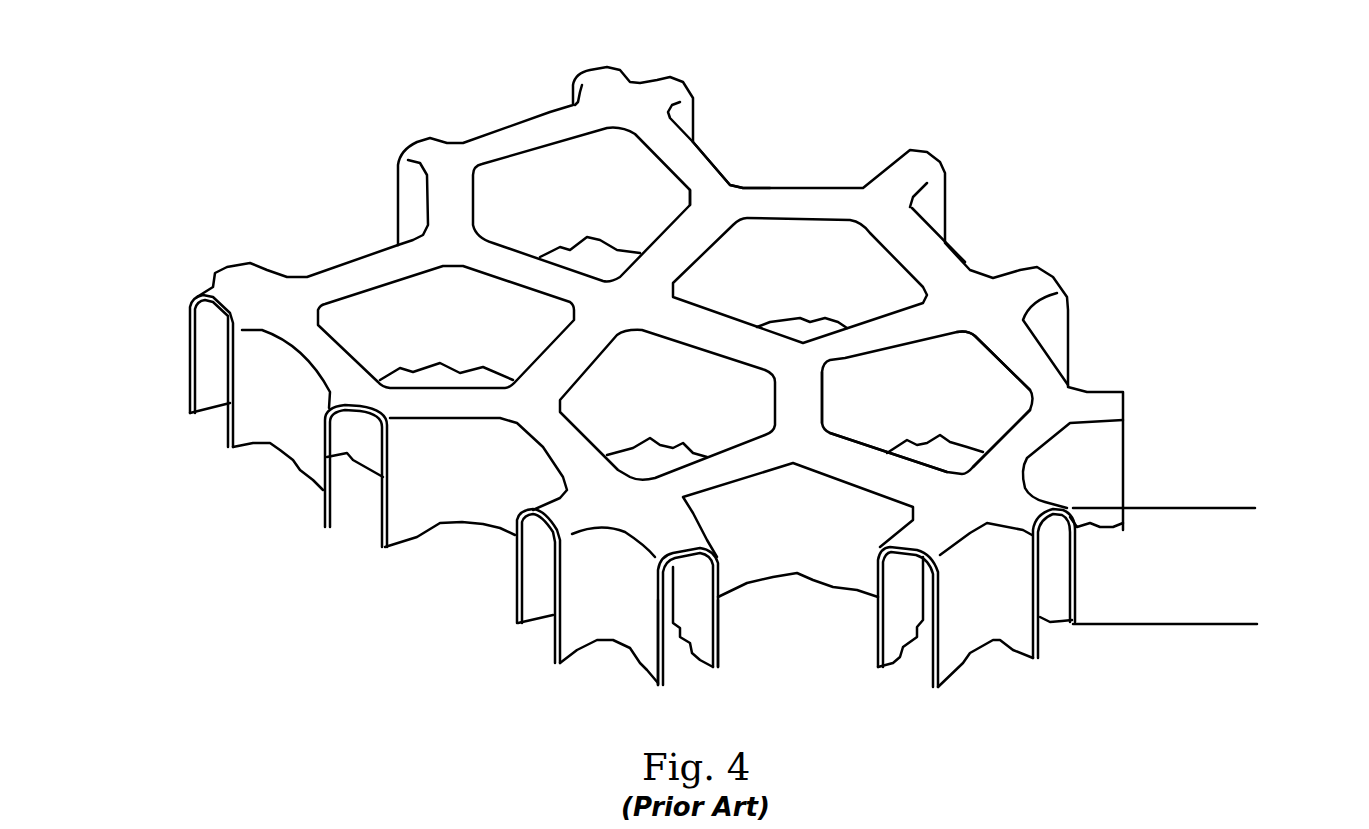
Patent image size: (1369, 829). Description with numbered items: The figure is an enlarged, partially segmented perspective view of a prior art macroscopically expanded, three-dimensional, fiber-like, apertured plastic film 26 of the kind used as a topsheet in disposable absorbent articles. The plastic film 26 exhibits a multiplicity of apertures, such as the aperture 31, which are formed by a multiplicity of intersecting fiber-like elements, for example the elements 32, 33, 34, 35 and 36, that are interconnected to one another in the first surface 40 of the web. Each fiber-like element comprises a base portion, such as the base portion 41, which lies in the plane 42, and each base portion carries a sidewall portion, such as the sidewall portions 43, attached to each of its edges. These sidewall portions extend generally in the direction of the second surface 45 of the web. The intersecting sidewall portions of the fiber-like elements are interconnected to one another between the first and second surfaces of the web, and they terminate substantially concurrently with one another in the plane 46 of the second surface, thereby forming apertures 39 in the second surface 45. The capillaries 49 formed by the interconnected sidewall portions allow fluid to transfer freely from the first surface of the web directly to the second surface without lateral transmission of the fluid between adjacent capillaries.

The plastic film 26 is at (388, 187).
The aperture 31 is at (565, 178).
The first surface 40 is at (708, 213).
The capillary 49 is at (687, 347).
The fiber-like element 32 is at (965, 307).
The fiber-like element 33 is at (1063, 397).
The fiber-like element 34 is at (1063, 400).
The fiber-like element 35 is at (965, 502).
The fiber-like element 36 is at (803, 358).
The base portion 41 is at (697, 550).
The sidewall portion 43 is at (660, 633).
The aperture 39 is at (825, 612).
The second surface 45 is at (1005, 645).
The plane 42 is at (1200, 508).
The plane 46 is at (1210, 624).